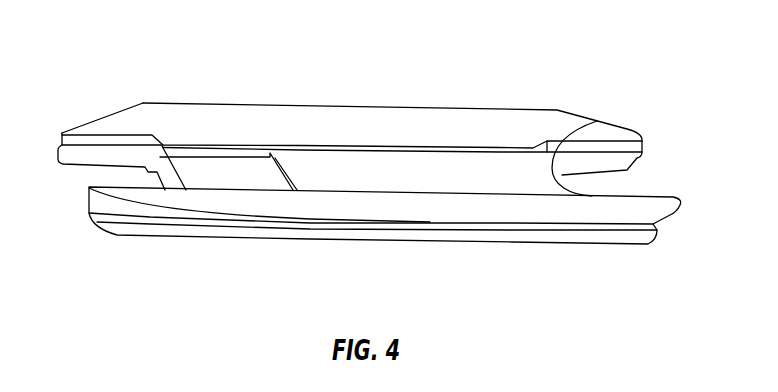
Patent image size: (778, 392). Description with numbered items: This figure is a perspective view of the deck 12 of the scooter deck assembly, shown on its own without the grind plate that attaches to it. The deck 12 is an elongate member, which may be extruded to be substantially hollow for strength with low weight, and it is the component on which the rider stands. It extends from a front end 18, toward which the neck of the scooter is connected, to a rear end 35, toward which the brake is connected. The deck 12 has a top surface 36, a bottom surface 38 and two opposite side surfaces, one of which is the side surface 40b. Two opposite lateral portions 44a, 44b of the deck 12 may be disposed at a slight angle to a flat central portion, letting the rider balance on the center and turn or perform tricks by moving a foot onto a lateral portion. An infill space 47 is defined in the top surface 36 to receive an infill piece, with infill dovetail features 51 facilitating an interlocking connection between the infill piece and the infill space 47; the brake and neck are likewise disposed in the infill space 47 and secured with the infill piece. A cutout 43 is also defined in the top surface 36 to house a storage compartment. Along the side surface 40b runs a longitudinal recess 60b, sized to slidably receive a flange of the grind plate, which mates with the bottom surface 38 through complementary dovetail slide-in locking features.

The deck 12 is at (173, 53).
The front end 18 is at (168, 171).
The rear end 35 is at (575, 192).
The top surface 36 is at (432, 125).
The bottom surface 38 is at (422, 248).
The side surface 40b is at (295, 233).
The cutout 43 is at (220, 180).
The lateral portion 44a is at (522, 118).
The lateral portion 44b is at (533, 217).
The infill space 47 is at (403, 175).
The infill dovetail features 51 is at (485, 153).
The longitudinal recess 60b is at (148, 220).